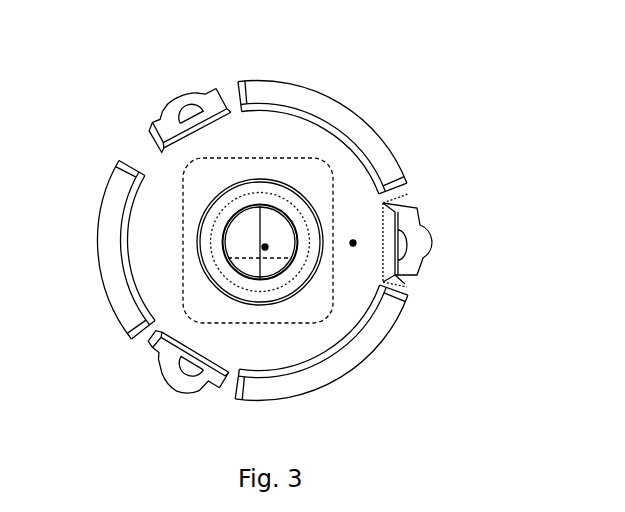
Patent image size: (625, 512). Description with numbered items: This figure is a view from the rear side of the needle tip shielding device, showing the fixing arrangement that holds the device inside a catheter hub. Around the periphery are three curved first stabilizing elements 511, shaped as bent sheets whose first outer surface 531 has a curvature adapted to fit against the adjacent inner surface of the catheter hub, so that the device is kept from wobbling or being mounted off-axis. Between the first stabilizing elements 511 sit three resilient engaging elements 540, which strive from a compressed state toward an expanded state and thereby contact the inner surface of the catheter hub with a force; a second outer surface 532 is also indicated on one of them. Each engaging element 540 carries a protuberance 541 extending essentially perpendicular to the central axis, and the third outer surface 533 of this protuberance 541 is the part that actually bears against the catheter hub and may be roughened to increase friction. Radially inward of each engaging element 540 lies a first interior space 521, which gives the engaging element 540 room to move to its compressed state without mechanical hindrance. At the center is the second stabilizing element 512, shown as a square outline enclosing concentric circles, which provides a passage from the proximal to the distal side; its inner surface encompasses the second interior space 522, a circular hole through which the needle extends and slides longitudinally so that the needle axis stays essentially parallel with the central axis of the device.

The first stabilizing element 511 is at (362, 128).
The second stabilizing element 512 is at (181, 197).
The first interior space 521 is at (353, 243).
The second interior space 522 is at (265, 247).
The first outer surface 531 is at (333, 92).
The second outer surface 532 is at (156, 117).
The third outer surface 533 is at (176, 89).
The engaging element 540 is at (207, 96).
The protuberance 541 is at (186, 92).